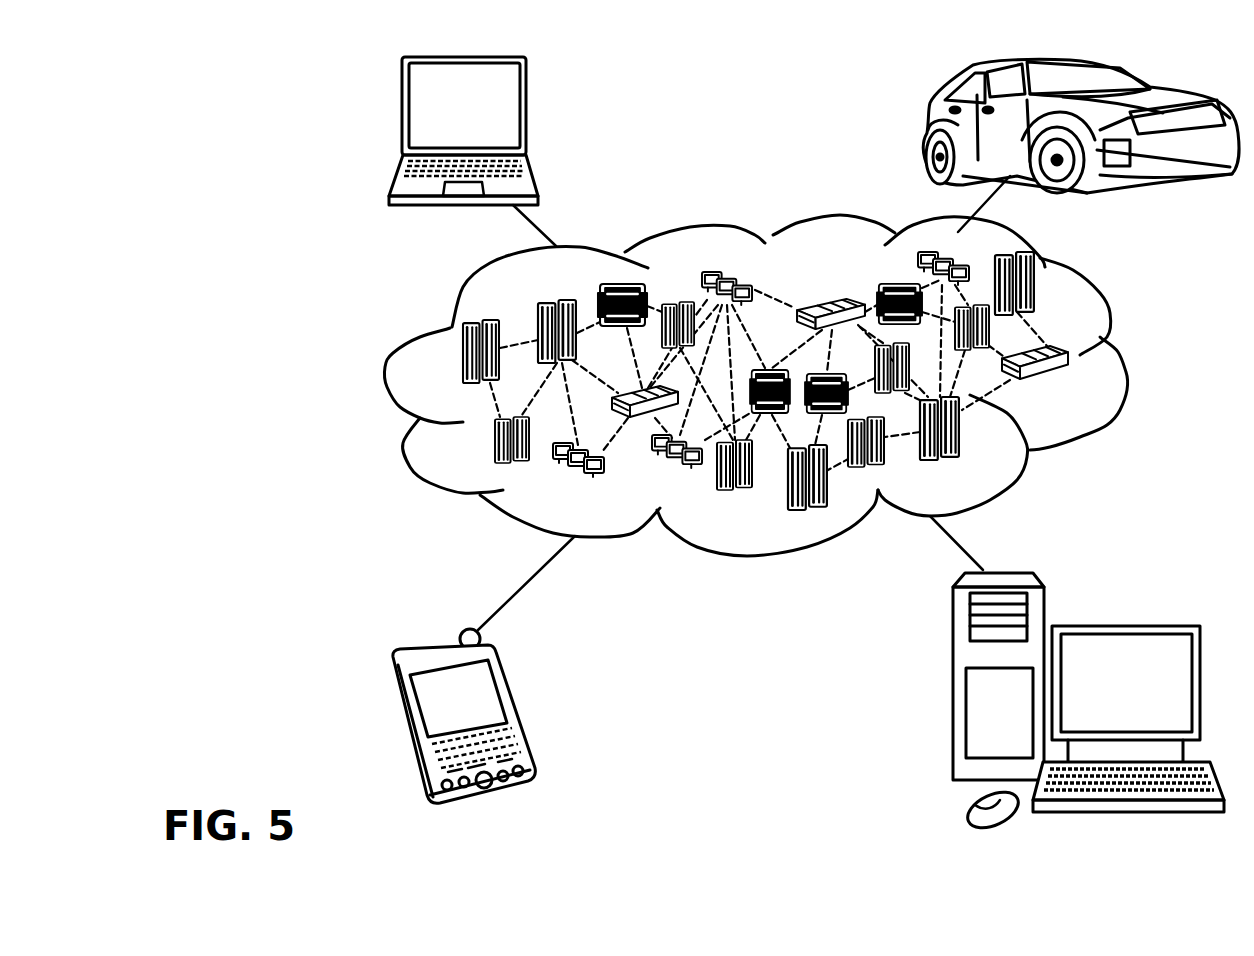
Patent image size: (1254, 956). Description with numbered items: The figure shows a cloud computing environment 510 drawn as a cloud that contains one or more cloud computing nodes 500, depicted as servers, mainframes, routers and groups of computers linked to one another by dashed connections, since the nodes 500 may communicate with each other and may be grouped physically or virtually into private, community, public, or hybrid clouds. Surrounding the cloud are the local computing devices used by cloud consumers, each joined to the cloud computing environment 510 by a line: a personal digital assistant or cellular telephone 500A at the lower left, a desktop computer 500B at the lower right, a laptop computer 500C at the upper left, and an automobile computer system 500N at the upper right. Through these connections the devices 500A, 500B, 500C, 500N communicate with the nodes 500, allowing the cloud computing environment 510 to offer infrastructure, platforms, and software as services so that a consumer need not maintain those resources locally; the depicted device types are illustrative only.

The cloud computing nodes 500 is at (148, 58).
The cloud computing environment 510 is at (1125, 362).
The personal digital assistant (PDA) or cellular telephone 500A is at (520, 709).
The desktop computer 500B is at (1124, 625).
The laptop computer 500C is at (527, 113).
The automobile computer system 500N is at (924, 130).